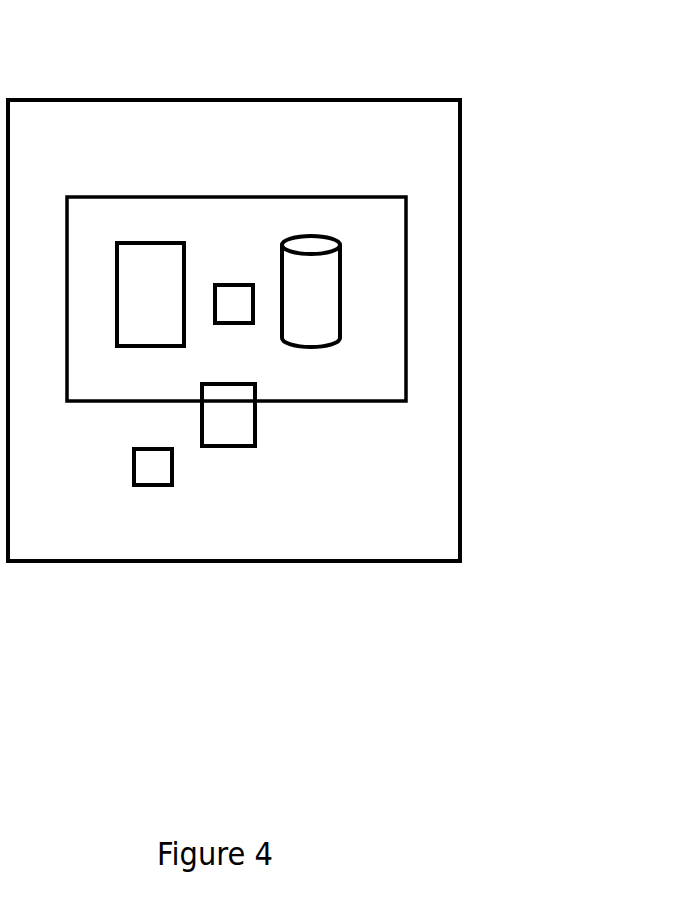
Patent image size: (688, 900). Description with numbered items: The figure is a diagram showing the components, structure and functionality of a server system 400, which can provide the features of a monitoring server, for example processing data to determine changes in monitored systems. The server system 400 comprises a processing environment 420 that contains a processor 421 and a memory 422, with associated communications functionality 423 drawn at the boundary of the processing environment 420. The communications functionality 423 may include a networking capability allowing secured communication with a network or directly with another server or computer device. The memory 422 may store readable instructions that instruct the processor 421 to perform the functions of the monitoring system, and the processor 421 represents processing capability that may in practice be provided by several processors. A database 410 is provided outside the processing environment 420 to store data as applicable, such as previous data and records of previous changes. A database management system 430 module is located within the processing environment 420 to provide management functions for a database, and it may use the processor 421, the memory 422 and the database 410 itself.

The server system 400 is at (512, 284).
The database 410 is at (144, 465).
The processing environment 420 is at (372, 382).
The processor 421 is at (148, 265).
The memory 422 is at (334, 238).
The communications functionality 423 is at (257, 429).
The database management system 430 is at (229, 280).